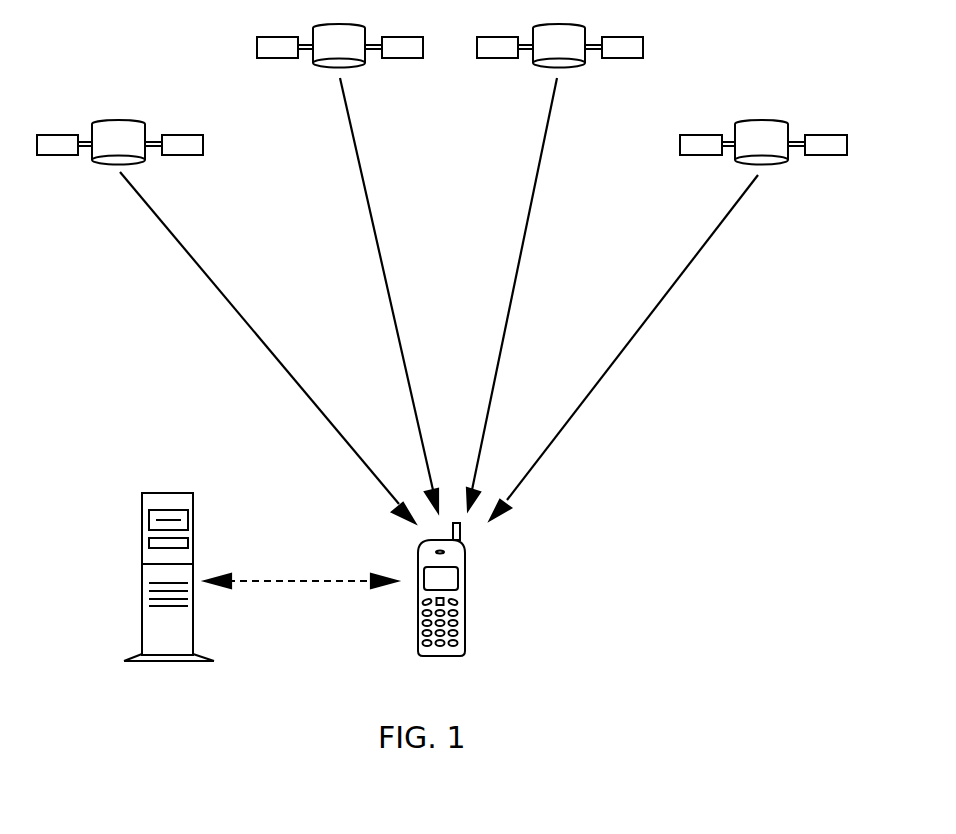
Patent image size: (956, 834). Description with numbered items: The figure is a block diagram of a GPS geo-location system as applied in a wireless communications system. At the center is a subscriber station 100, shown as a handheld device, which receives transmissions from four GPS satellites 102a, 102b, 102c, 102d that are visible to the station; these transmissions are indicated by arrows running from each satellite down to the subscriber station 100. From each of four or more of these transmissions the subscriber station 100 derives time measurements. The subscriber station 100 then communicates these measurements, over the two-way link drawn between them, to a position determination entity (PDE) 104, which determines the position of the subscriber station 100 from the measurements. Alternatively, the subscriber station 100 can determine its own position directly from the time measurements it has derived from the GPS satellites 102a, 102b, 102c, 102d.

The subscriber station 100 is at (466, 590).
The GPS satellite 102a is at (100, 166).
The GPS satellite 102b is at (321, 69).
The GPS satellite 102c is at (537, 69).
The GPS satellite 102d is at (742, 166).
The position determination entity (PDE) 104 is at (163, 493).